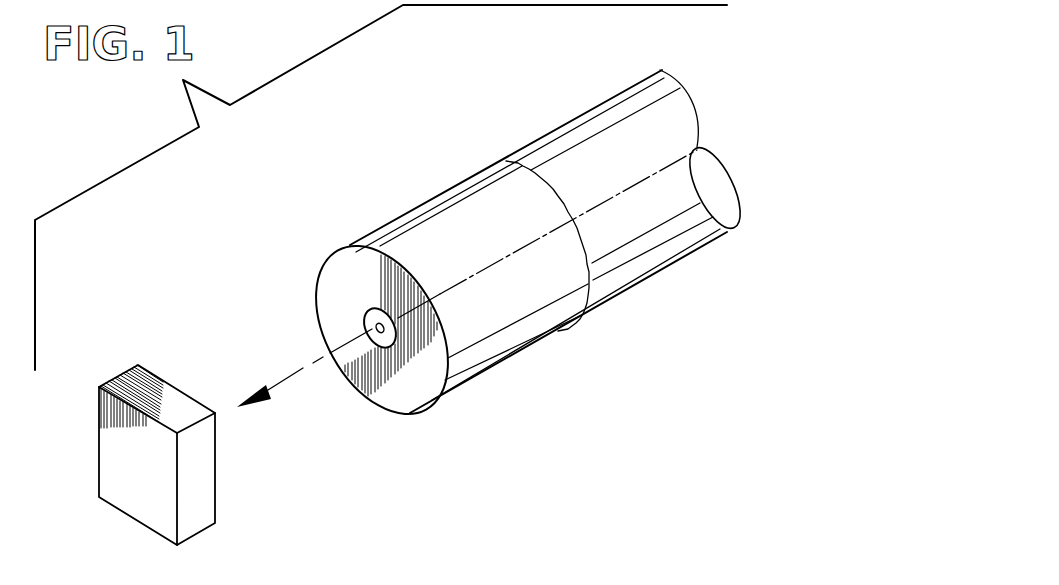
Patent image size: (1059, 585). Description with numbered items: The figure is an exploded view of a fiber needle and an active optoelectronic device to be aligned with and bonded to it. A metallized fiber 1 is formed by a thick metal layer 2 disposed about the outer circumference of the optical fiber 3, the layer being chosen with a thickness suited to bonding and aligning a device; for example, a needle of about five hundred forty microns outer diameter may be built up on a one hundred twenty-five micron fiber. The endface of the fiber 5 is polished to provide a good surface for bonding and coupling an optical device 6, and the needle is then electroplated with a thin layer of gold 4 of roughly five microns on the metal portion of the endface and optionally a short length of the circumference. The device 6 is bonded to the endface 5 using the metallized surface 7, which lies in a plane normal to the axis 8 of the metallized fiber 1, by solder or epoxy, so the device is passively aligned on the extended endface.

The metallized fiber 1 is at (266, 177).
The thick metal layer 2 is at (542, 136).
The optical fiber 3 is at (360, 319).
The thin layer of gold 4 is at (515, 331).
The endface of the fiber 5 is at (383, 395).
The optical device 6 is at (117, 449).
The metallized surface 7 is at (348, 268).
The axis 8 is at (303, 367).